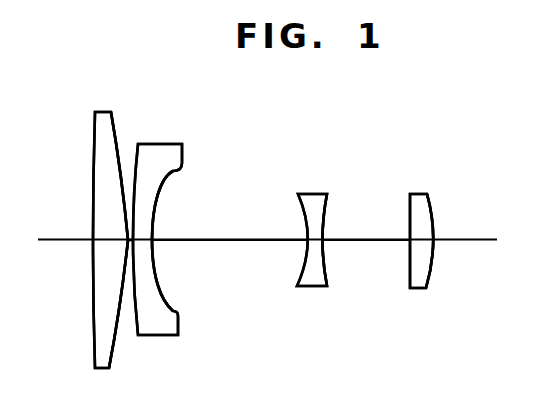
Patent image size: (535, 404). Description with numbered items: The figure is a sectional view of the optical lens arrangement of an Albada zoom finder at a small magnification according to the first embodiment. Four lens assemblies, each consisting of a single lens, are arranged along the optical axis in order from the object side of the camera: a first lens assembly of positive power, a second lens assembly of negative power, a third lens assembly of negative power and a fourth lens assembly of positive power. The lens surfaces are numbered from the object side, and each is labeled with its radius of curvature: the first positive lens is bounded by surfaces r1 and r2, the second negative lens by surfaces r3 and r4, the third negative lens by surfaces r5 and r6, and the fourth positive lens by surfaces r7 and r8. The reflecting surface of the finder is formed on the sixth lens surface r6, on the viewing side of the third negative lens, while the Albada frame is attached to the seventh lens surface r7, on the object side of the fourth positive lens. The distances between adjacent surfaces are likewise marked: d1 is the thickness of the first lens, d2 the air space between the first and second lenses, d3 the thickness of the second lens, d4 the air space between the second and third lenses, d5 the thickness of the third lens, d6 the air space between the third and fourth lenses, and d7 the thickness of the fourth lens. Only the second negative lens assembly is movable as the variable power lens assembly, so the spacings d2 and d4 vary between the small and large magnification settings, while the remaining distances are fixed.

The first lens surface radius of curvature r1 is at (95, 148).
The second lens surface radius of curvature r2 is at (112, 122).
The third lens surface radius of curvature r3 is at (138, 144).
The fourth lens surface radius of curvature r4 is at (170, 172).
The fifth lens surface radius of curvature r5 is at (301, 217).
The sixth lens surface radius of curvature r6 is at (329, 212).
The seventh lens surface radius of curvature r7 is at (408, 218).
The eighth lens surface radius of curvature r8 is at (434, 222).
The first surface distance d1 is at (118, 240).
The second surface distance d2 is at (130, 242).
The third surface distance d3 is at (145, 242).
The fourth surface distance d4 is at (248, 240).
The fifth surface distance d5 is at (315, 240).
The sixth surface distance d6 is at (373, 240).
The seventh surface distance d7 is at (420, 241).